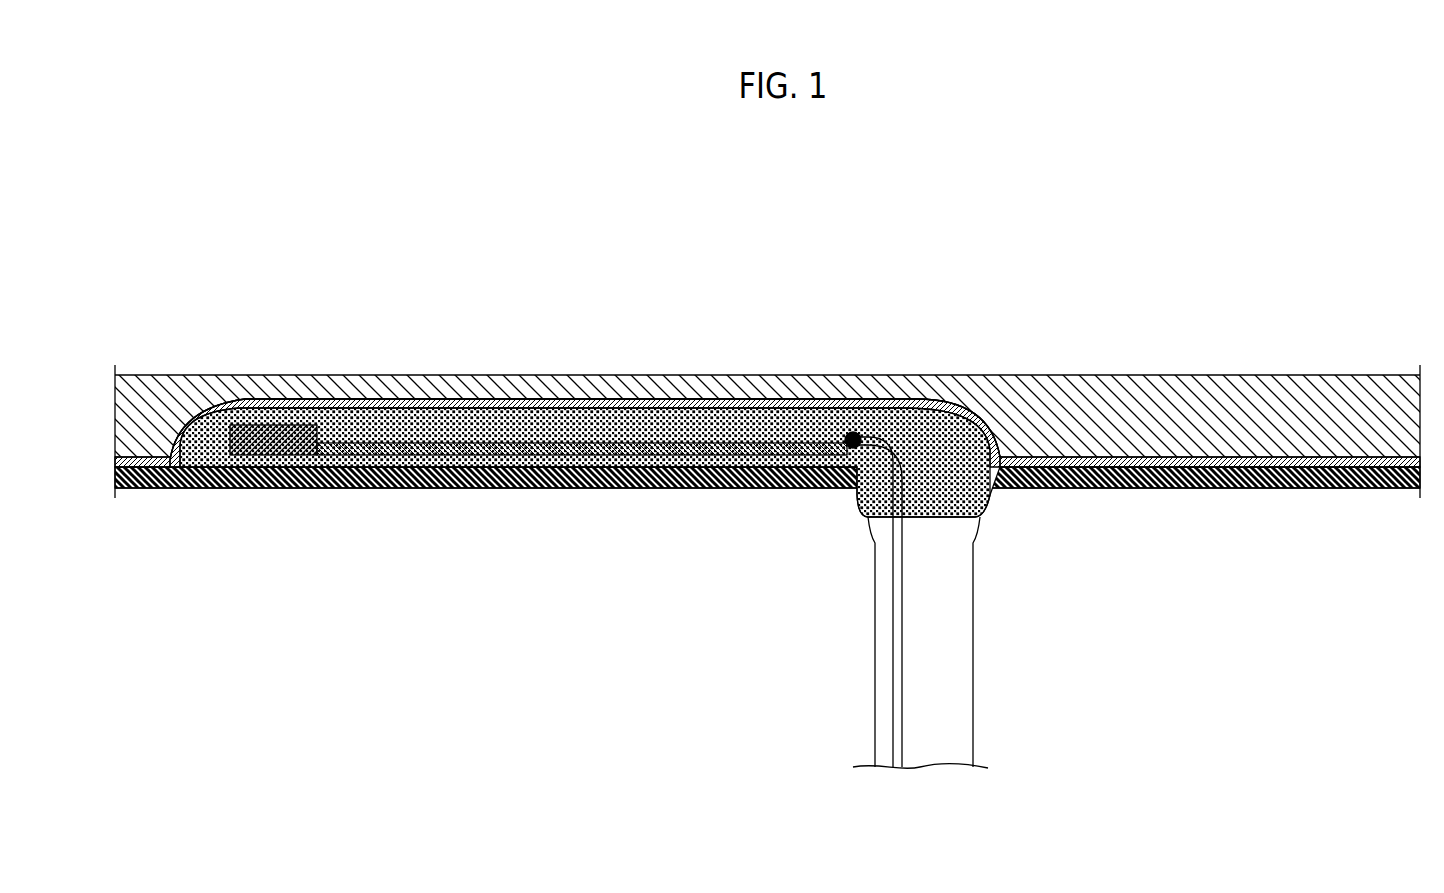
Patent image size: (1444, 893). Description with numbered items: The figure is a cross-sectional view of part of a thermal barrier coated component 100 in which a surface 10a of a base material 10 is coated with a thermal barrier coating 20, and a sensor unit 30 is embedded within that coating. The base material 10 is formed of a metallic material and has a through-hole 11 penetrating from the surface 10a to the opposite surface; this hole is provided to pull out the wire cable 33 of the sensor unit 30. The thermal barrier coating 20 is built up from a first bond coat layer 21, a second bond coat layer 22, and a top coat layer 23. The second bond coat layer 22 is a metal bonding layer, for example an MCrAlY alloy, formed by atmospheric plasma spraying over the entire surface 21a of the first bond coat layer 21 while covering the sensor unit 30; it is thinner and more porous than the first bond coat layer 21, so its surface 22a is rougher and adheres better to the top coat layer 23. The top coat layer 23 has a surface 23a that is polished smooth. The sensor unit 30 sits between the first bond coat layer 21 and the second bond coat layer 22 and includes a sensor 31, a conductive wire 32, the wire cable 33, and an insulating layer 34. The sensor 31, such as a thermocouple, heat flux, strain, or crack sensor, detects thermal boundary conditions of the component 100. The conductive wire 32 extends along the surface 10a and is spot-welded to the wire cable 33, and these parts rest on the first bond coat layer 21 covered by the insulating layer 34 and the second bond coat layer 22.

The thermal barrier coated component 100 is at (1262, 250).
The thermal barrier coating 20 is at (1177, 348).
The base material 10 is at (685, 517).
The surface of the base material 10a is at (737, 480).
The through-hole 11 is at (972, 710).
The first bond coat layer 21 is at (567, 480).
The surface of the first bond coat layer 21a is at (462, 460).
The second bond coat layer 22 is at (586, 405).
The surface of the second bond coat layer 22a is at (787, 403).
The top coat layer 23 is at (1062, 403).
The surface of the top coat layer 23a is at (896, 375).
The sensor unit 30 is at (214, 398).
The sensor 31 is at (284, 428).
The conductive wire 32 is at (383, 445).
The wire cable 33 is at (902, 710).
The insulating layer 34 is at (484, 420).